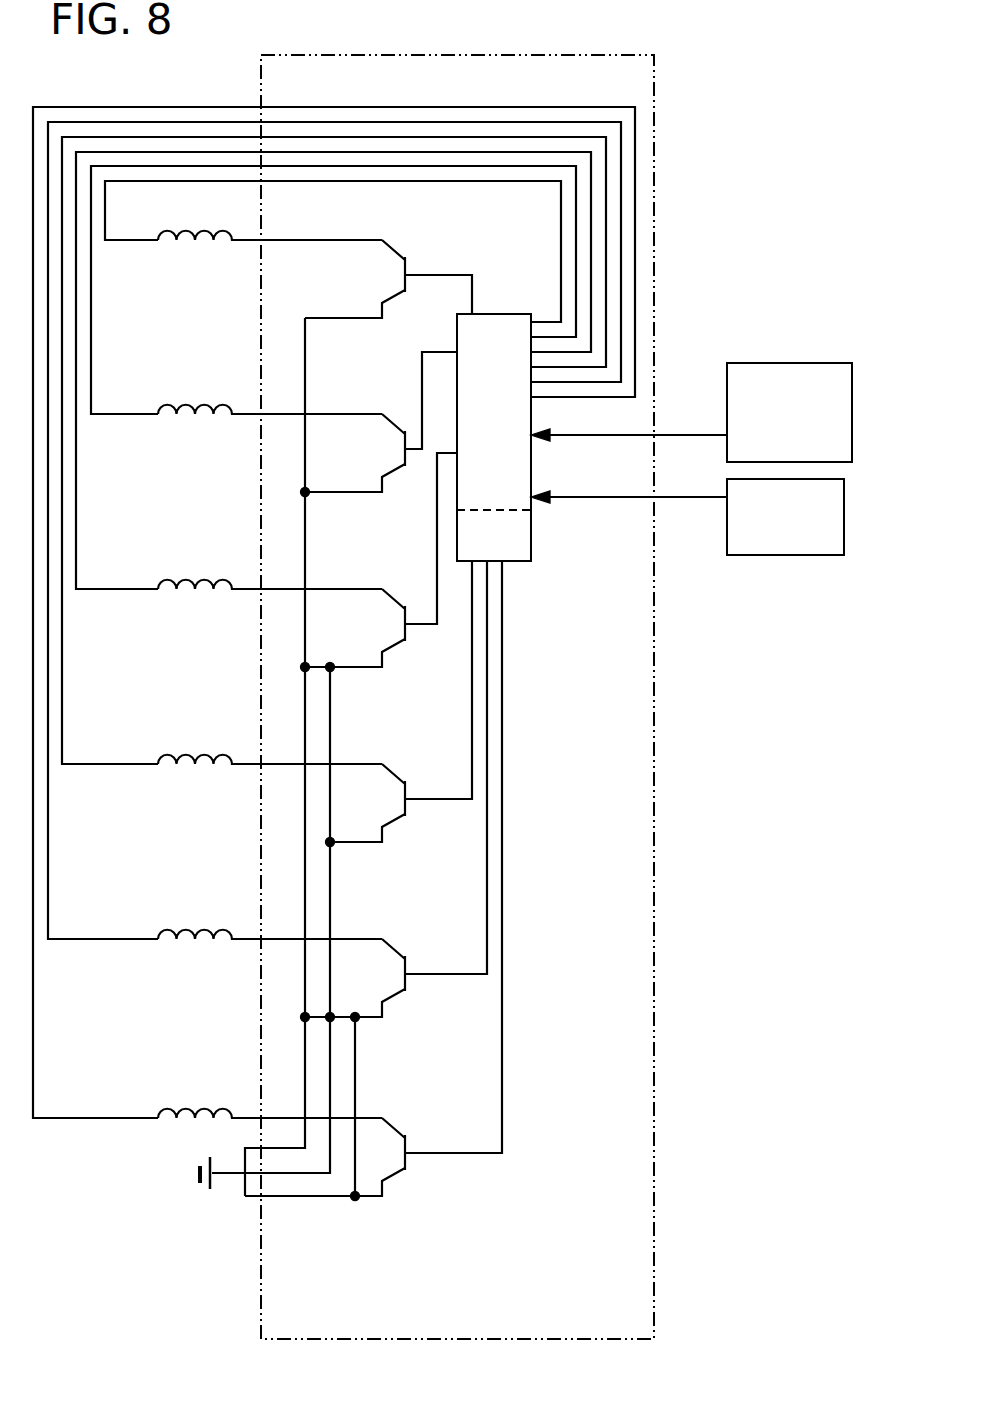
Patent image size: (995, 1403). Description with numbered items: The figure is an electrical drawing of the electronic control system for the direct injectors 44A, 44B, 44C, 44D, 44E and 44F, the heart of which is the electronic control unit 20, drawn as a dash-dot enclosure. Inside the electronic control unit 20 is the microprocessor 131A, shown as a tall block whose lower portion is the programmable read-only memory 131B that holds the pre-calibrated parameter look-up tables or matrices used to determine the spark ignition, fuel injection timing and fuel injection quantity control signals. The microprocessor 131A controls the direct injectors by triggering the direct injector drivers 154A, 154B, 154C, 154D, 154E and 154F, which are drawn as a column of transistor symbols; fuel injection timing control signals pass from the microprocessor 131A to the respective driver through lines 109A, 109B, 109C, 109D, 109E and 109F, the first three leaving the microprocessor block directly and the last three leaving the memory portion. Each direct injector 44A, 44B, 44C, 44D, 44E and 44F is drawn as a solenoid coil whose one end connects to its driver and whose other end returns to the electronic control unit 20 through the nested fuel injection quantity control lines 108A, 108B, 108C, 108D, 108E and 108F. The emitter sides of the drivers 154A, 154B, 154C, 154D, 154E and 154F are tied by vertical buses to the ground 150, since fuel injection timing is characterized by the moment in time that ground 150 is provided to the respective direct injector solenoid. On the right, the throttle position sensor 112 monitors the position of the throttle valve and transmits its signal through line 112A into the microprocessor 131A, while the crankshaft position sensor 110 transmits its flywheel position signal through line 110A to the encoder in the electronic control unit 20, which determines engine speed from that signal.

The electronic control unit 20 is at (555, 55).
The direct injector 44A is at (193, 243).
The direct injector 44B is at (193, 418).
The direct injector 44C is at (193, 593).
The direct injector 44D is at (193, 768).
The direct injector 44E is at (193, 943).
The direct injector 44F is at (178, 1122).
The fuel injection quantity control signal line 108A is at (105, 197).
The fuel injection quantity control signal line 108B is at (91, 355).
The fuel injection quantity control signal line 108C is at (76, 480).
The fuel injection quantity control signal line 108D is at (62, 663).
The fuel injection quantity control signal line 108E is at (48, 837).
The fuel injection quantity control signal line 108F is at (33, 1010).
The fuel injection timing control signal line 109A is at (440, 275).
The fuel injection timing control signal line 109B is at (420, 360).
The fuel injection timing control signal line 109C is at (435, 525).
The fuel injection timing control signal line 109D is at (470, 712).
The fuel injection timing control signal line 109E is at (485, 893).
The fuel injection timing control signal line 109F is at (500, 1068).
The crankshaft position sensor 110 is at (757, 557).
The crankshaft position signal line 110A is at (588, 499).
The throttle position sensor 112 is at (757, 362).
The throttle position signal line 112A is at (682, 435).
The microprocessor 131A is at (495, 312).
The programmable read-only memory 131B is at (520, 562).
The ground 150 is at (200, 1190).
The direct injector driver 154A is at (395, 273).
The direct injector driver 154B is at (395, 452).
The direct injector driver 154C is at (408, 637).
The direct injector driver 154D is at (408, 812).
The direct injector driver 154E is at (410, 988).
The direct injector driver 154F is at (410, 1165).